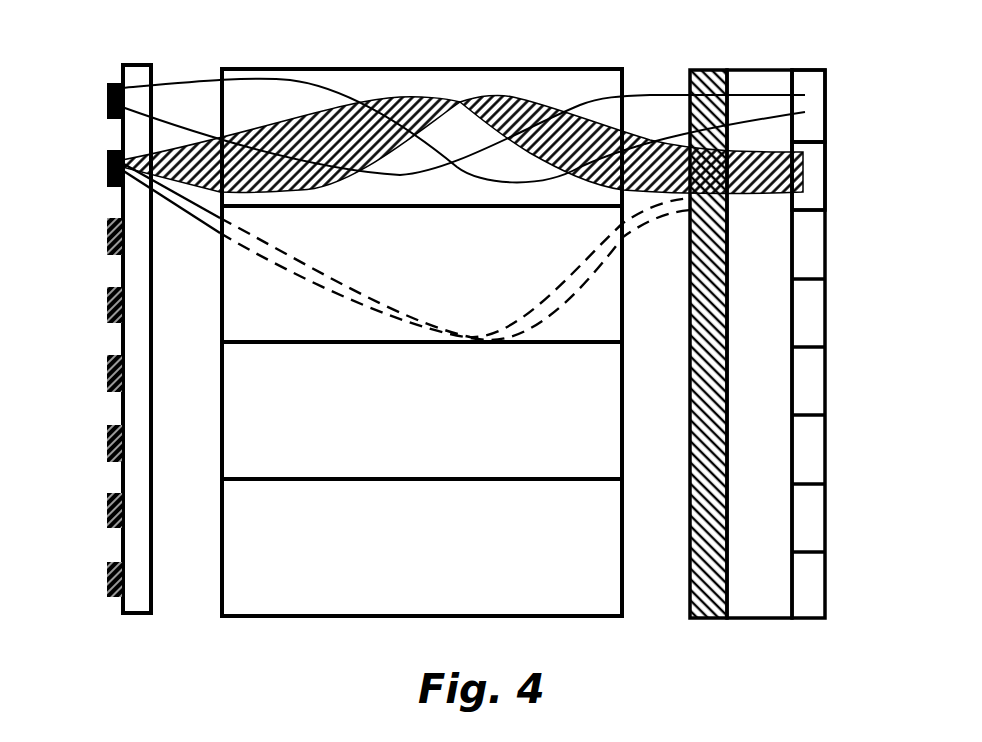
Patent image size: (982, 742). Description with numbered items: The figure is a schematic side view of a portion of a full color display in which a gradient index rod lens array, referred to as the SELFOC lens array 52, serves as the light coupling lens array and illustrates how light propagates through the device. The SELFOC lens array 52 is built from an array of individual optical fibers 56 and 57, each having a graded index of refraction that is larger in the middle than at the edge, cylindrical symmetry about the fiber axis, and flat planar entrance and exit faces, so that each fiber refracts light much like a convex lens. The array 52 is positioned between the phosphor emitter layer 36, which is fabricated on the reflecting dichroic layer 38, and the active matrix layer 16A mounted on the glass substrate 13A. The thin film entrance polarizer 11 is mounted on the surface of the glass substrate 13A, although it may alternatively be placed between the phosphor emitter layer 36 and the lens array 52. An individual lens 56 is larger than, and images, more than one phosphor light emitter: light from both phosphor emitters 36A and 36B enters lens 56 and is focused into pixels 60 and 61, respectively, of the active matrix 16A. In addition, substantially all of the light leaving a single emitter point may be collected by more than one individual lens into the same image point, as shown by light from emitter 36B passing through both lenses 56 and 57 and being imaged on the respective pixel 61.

The thin film entrance polarizer 11 is at (708, 68).
The glass substrate 13A is at (763, 68).
The active matrix layer 16A is at (808, 68).
The phosphor emitter layer 36 is at (112, 598).
The phosphor emitter 36A is at (111, 83).
The phosphor emitter 36B is at (111, 151).
The reflecting dichroic layer 38 is at (137, 63).
The SELFOC lens array 52 is at (440, 52).
The optical fiber 56 is at (587, 68).
The optical fiber 57 is at (627, 303).
The pixel 60 is at (827, 100).
The pixel 61 is at (827, 173).